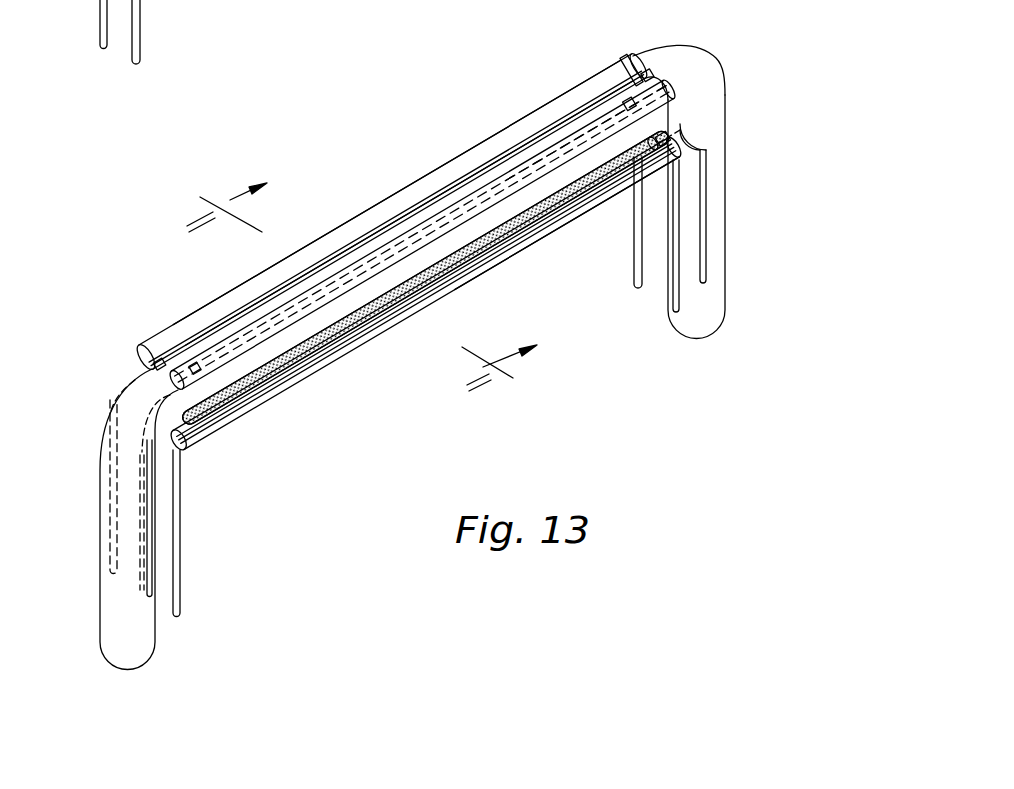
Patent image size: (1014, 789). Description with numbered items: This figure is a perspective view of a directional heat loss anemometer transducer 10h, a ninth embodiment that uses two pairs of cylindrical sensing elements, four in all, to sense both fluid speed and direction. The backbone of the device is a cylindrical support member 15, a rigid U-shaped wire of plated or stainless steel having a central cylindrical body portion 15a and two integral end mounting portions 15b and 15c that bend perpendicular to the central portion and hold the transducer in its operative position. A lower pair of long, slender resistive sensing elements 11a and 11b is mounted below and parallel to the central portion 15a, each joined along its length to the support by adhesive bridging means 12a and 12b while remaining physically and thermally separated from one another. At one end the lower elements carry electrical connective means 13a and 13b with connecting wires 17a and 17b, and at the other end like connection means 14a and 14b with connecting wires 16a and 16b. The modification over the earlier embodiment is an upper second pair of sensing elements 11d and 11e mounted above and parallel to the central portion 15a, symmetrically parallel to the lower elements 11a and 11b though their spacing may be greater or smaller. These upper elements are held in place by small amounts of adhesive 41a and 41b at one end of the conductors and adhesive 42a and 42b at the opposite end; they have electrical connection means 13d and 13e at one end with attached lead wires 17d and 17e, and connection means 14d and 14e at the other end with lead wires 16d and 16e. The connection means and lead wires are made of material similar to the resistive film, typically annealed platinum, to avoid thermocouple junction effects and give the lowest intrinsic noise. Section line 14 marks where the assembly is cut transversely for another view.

The directional heat loss anemometer transducer 10h is at (542, 264).
The sensing element 11a is at (355, 308).
The sensing element 11b is at (265, 398).
The sensing element 11d is at (449, 165).
The sensing element 11e is at (510, 174).
The bridging means 12a is at (130, 405).
The bridging means 12b is at (323, 347).
The electrical connective means 13a is at (140, 425).
The electrical connective means 13b is at (180, 452).
The electrical connection means 13d is at (138, 359).
The electrical connection means 13e is at (170, 390).
The section line 14 is at (341, 299).
The connection means 14a is at (613, 97).
The connection means 14b is at (680, 142).
The electrical connection means 14d is at (643, 56).
The electrical connection means 14e is at (718, 60).
The cylindrical support member 15 is at (371, 246).
The central cylindrical body portion 15a is at (401, 232).
The end mounting portion 15b is at (135, 645).
The end mounting portion 15c is at (716, 310).
The connecting wire 16a is at (638, 252).
The connecting wire 16b is at (676, 295).
The lead wire 16d is at (690, 127).
The lead wire 16e is at (706, 242).
The electrical connecting wire 17a is at (150, 520).
The electrical connecting wire 17b is at (178, 565).
The lead wire 17d is at (110, 497).
The lead wire 17e is at (152, 580).
The adhesive 41a is at (162, 364).
The adhesive 41b is at (196, 370).
The adhesive 42a is at (650, 73).
The adhesive 42b is at (690, 95).